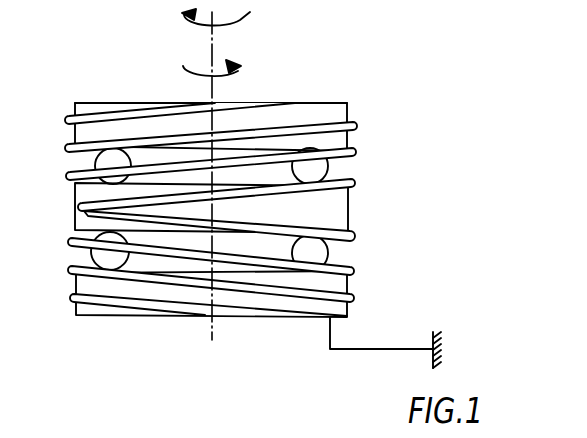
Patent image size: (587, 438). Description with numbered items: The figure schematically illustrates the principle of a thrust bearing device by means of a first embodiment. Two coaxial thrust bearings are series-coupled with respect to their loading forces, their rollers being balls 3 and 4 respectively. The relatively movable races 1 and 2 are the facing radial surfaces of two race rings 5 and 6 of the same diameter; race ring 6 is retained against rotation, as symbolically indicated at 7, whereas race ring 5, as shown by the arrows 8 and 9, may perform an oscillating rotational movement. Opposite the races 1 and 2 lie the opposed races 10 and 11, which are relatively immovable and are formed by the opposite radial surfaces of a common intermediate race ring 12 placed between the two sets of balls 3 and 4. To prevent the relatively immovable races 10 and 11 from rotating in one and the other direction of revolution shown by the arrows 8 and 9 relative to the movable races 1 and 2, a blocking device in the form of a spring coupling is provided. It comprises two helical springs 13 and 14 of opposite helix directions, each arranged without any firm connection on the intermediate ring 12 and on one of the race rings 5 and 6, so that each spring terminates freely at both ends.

The relatively movable race 1 is at (160, 152).
The relatively movable race 2 is at (96, 254).
The balls 3 is at (323, 167).
The balls 4 is at (322, 252).
The race ring 5 is at (337, 115).
The race ring 6 is at (342, 308).
The retention against rotation 7 is at (436, 332).
The arrow 8 is at (250, 12).
The arrow 9 is at (240, 72).
The opposed race 10 is at (66, 175).
The opposed race 11 is at (68, 252).
The intermediate race ring 12 is at (343, 205).
The helical spring 13 is at (96, 118).
The helical spring 14 is at (86, 300).